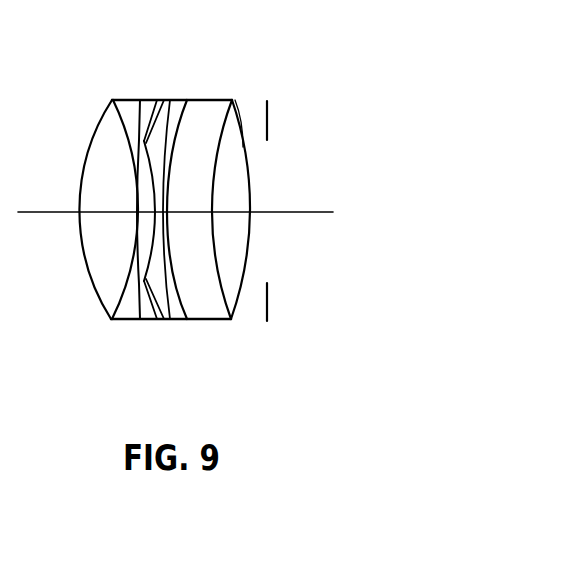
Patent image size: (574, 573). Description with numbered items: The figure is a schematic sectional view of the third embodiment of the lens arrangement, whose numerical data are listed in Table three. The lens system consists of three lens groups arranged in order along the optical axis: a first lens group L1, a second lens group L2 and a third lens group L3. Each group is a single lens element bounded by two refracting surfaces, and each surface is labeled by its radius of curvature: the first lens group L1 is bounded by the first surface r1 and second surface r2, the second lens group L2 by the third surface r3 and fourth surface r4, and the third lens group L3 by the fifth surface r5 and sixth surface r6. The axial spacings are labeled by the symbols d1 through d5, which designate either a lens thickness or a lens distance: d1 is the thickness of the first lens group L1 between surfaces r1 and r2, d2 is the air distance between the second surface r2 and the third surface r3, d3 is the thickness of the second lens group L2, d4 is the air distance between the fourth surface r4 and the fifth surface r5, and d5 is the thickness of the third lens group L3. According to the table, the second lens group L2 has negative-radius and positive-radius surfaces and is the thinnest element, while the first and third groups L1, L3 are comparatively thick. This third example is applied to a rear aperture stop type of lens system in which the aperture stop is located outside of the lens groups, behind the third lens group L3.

The first lens group L1 is at (130, 47).
The second lens group L2 is at (203, 47).
The third lens group L3 is at (277, 47).
The radius of curvature of first lens surface r1 is at (92, 137).
The radius of curvature of second lens surface r2 is at (113, 100).
The radius of curvature of third lens surface r3 is at (141, 100).
The radius of curvature of fourth lens surface r4 is at (172, 100).
The radius of curvature of fifth lens surface r5 is at (188, 170).
The radius of curvature of sixth lens surface r6 is at (233, 100).
The lens thickness d1 is at (103, 214).
The lens distance d2 is at (126, 275).
The lens thickness d3 is at (156, 214).
The lens distance d4 is at (179, 214).
The lens thickness d5 is at (232, 312).